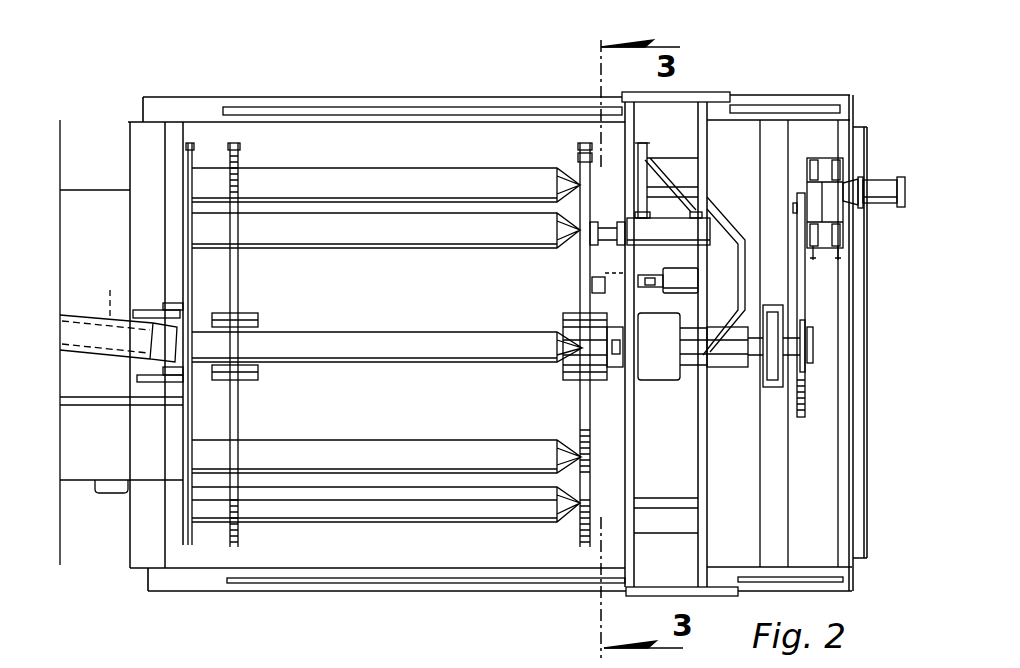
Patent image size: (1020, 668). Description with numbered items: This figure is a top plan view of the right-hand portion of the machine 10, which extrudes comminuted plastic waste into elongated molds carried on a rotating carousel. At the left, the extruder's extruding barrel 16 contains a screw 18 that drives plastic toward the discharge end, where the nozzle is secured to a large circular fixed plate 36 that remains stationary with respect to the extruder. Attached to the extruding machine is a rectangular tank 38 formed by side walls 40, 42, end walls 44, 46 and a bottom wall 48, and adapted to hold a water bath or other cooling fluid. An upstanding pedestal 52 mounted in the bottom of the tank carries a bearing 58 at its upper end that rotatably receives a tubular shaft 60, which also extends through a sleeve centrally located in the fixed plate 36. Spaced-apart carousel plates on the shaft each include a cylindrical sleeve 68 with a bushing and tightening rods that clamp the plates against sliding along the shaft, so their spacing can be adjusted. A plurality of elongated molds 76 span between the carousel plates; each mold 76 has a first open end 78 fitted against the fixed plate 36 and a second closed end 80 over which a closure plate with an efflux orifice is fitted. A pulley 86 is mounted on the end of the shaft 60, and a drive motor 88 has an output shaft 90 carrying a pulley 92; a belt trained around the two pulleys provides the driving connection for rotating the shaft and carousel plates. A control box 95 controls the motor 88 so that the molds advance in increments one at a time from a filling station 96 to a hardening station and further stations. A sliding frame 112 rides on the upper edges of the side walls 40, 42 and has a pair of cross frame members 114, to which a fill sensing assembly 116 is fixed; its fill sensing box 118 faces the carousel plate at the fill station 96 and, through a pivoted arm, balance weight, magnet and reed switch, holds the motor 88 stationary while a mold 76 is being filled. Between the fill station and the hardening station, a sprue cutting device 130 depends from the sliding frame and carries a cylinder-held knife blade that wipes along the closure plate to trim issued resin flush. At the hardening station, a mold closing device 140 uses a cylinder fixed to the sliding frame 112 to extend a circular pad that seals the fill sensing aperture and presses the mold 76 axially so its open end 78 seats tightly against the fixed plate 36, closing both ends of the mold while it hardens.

The machine 10 is at (287, 52).
The extruding barrel 16 is at (124, 320).
The screw 18 is at (109, 295).
The circular fixed plate 36 is at (187, 523).
The rectangular tank 38 is at (347, 594).
The side wall 40 is at (452, 96).
The side wall 42 is at (362, 594).
The end wall 44 is at (165, 545).
The end wall 46 is at (838, 470).
The bottom wall 48 is at (496, 561).
The pedestal 52 is at (778, 363).
The bearing 58 is at (782, 303).
The tubular shaft 60 is at (728, 367).
The cylindrical sleeve 68 is at (248, 382).
The elongated mold 76 is at (352, 205).
The first open end 78 is at (190, 172).
The second closed end 80 is at (578, 178).
The pulley 86 is at (782, 363).
The drive motor 88 is at (878, 185).
The output shaft 90 is at (848, 237).
The pulley 92 is at (798, 202).
The control box 95 is at (832, 190).
The filling station 96 is at (528, 320).
The sliding frame 112 is at (690, 92).
The cross frame member 114 is at (633, 477).
The fill sensing assembly 116 is at (668, 372).
The fill sensing box 118 is at (597, 352).
The sprue cutting device 130 is at (613, 280).
The mold closing device 140 is at (663, 227).